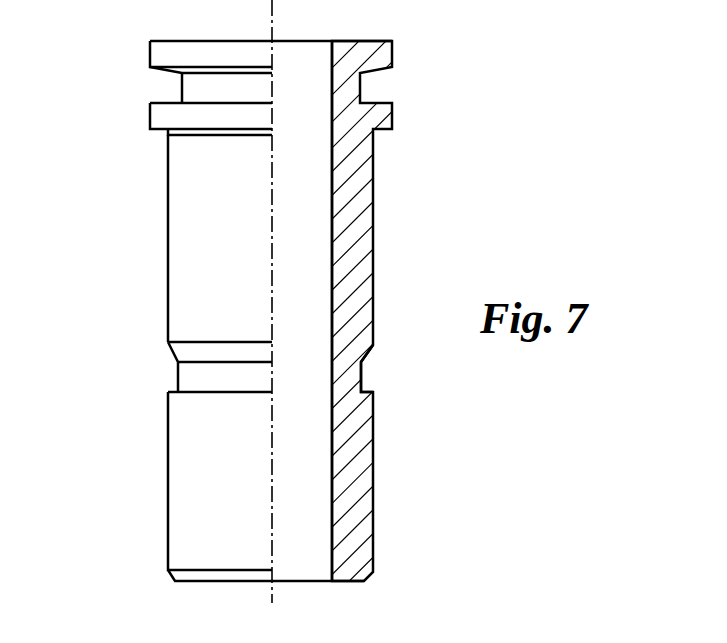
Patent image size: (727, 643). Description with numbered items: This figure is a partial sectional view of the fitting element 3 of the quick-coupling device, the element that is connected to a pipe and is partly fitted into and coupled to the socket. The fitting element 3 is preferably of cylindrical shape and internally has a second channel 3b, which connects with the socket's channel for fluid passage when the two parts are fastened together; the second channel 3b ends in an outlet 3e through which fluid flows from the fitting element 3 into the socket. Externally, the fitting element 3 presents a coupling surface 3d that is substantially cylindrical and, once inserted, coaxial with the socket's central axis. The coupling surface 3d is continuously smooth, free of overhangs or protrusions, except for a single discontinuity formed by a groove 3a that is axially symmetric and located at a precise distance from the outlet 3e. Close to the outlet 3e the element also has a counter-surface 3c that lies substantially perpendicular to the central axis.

The fitting element 3 is at (363, 301).
The groove 3a is at (178, 375).
The second channel 3b is at (312, 478).
The counter-surface 3c is at (373, 393).
The coupling surface 3d is at (223, 280).
The outlet 3e is at (300, 582).